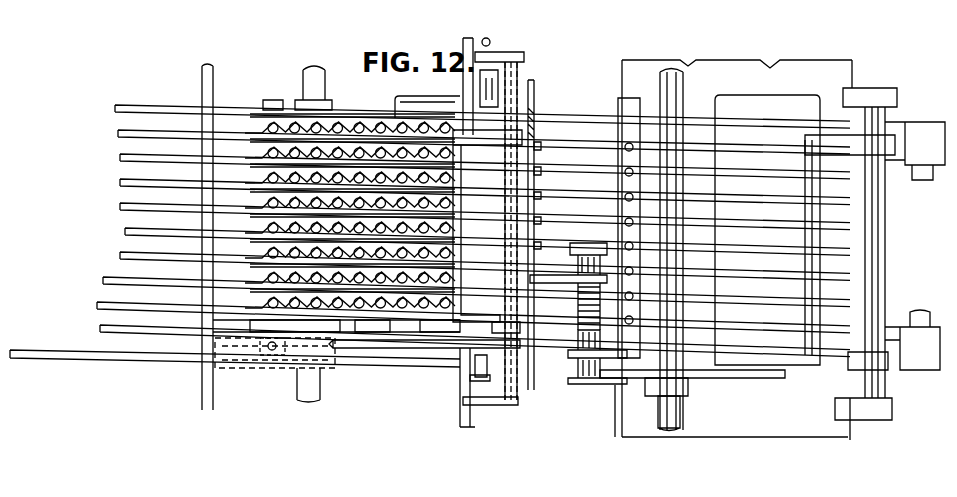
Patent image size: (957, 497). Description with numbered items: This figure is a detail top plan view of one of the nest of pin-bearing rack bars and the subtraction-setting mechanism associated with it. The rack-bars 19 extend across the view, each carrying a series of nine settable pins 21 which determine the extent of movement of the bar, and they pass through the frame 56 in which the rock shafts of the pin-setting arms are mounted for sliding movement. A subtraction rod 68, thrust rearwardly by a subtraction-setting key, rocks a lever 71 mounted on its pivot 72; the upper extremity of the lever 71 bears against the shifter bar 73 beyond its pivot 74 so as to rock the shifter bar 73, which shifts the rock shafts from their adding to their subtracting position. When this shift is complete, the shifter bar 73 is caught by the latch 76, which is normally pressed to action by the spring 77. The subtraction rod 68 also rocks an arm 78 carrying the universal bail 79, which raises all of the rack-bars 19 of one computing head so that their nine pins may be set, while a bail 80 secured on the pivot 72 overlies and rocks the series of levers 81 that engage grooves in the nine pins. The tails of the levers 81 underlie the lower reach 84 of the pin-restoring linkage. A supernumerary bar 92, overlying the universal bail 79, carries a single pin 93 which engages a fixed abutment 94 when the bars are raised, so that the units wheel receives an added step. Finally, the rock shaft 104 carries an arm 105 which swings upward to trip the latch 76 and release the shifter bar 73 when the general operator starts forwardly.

The rack-bars 19 is at (126, 233).
The pins 21 is at (250, 226).
The frame 56 is at (214, 99).
The subtraction rod 68 is at (159, 362).
The lever 71 is at (458, 345).
The pivot 72 is at (519, 390).
The shifter bar 73 is at (497, 96).
The pivot 74 is at (491, 70).
The latch 76 is at (549, 277).
The spring 77 is at (577, 322).
The arm 78 is at (832, 378).
The universal bail 79 is at (804, 143).
The bail 80 is at (441, 114).
The levers 81 is at (540, 170).
The lower reach 84 is at (535, 110).
The supernumerary bar 92 is at (101, 327).
The pin 93 is at (272, 356).
The fixed abutment 94 is at (248, 370).
The rock shaft 104 is at (681, 412).
The arm 105 is at (648, 390).